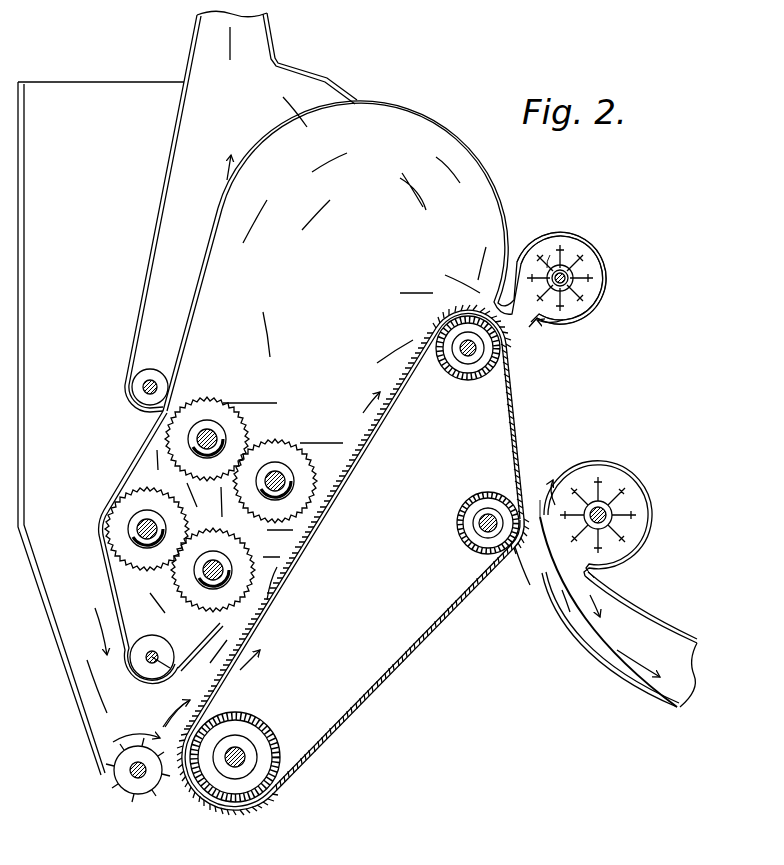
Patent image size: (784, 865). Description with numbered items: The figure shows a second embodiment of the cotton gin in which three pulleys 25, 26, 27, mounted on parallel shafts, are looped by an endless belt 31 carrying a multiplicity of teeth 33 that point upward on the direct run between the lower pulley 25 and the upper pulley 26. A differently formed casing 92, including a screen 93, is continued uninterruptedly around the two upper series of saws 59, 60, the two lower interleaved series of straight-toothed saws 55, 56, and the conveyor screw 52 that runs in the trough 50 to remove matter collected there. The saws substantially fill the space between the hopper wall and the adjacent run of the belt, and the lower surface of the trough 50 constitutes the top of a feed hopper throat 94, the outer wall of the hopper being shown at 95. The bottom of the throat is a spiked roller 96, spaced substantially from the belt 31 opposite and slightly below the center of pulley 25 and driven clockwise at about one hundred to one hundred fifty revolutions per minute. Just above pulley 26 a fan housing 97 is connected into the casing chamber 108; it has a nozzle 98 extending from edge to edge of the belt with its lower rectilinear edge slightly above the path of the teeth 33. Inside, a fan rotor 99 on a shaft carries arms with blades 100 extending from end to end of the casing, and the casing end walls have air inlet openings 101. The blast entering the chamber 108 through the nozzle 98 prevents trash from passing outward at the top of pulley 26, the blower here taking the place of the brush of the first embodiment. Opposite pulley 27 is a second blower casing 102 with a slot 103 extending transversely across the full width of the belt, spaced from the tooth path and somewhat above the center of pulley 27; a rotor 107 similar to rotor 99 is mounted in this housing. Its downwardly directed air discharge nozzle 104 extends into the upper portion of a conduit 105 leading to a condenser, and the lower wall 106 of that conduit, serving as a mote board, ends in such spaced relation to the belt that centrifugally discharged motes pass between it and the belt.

The pulley 25 is at (267, 730).
The pulley 26 is at (460, 385).
The pulley 27 is at (472, 532).
The endless belt 31 is at (288, 577).
The teeth 33 is at (527, 385).
The trough 50 is at (137, 687).
The conveyor screw 52 is at (163, 647).
The saws 55 is at (130, 503).
The saws 56 is at (227, 553).
The saws 59 is at (215, 408).
The saws 60 is at (285, 447).
The casing 92 is at (399, 108).
The screen 93 is at (222, 263).
The feed hopper throat 94 is at (120, 723).
The outer wall of the hopper 95 is at (58, 640).
The spiked roller 96 is at (152, 798).
The fan housing 97 is at (591, 265).
The nozzle 98 is at (527, 327).
The fan rotor 99 is at (593, 273).
The blades 100 is at (607, 297).
The air inlet openings 101 is at (543, 257).
The blower casing 102 is at (631, 518).
The slot 103 is at (543, 473).
The air discharge nozzle 104 is at (587, 583).
The conduit 105 is at (653, 643).
The lower wall 106 is at (553, 603).
The rotor 107 is at (622, 508).
The chamber 108 is at (364, 255).